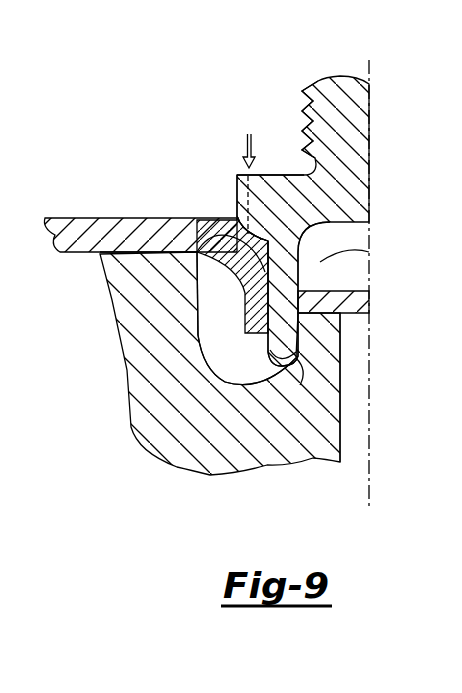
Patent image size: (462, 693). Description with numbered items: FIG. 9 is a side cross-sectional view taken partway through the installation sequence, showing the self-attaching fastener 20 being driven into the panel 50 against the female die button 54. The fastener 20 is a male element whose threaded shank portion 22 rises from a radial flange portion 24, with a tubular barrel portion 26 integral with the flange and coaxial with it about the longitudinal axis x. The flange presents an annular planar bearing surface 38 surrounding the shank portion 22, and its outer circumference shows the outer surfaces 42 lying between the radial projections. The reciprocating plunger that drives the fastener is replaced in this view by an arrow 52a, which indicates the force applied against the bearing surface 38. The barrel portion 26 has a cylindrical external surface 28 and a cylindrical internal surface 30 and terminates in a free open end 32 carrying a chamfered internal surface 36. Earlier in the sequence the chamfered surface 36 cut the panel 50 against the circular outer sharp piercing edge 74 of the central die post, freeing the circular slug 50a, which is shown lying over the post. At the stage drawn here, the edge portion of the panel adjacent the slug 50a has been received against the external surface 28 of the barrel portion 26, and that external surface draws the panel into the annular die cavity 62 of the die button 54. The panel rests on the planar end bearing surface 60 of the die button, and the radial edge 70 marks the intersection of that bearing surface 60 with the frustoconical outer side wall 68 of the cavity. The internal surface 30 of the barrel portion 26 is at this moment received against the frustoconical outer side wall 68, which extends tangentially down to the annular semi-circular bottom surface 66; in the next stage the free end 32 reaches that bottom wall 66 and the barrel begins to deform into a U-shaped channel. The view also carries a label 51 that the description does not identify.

The self-attaching fastener 20 is at (310, 82).
The threaded shank portion 22 is at (338, 135).
The radial flange portion 24 is at (230, 188).
The tubular barrel portion 26 is at (292, 245).
The cylindrical external surface 28 is at (299, 281).
The cylindrical internal surface 30 is at (369, 252).
The free open end 32 is at (264, 378).
The chamfered internal surface 36 is at (300, 392).
The annular planar bearing surface 38 is at (283, 172).
The outer surfaces of the radial flange portion 42 is at (234, 168).
The panel 50 is at (72, 227).
The circular slug 50a is at (340, 308).
The seal sealing surface 51 is at (250, 258).
The arrow 52a is at (256, 138).
The female die button 54 is at (165, 410).
The planar end bearing surface 60 is at (127, 250).
The annular die cavity 62 is at (254, 364).
The annular semi-circular bottom surface 66 is at (237, 384).
The frustoconical outer side wall 68 is at (215, 291).
The radial edge 70 is at (184, 258).
The circular outer sharp piercing edge 74 is at (340, 370).
The longitudinal axis x is at (370, 174).